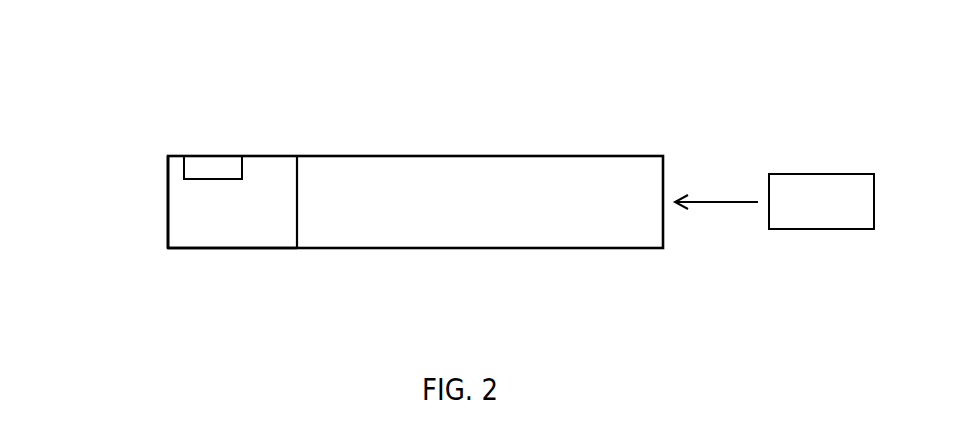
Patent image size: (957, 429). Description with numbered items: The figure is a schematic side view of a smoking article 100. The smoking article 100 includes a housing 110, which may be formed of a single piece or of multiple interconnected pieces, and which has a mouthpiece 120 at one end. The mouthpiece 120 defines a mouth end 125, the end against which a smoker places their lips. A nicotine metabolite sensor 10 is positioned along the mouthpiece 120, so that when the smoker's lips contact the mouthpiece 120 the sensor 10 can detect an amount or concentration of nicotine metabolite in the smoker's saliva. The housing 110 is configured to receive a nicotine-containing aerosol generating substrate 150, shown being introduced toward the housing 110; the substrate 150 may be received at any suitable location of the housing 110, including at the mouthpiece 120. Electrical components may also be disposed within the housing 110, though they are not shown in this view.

The smoking article 100 is at (182, 98).
The nicotine metabolite sensor 10 is at (212, 169).
The housing 110 is at (387, 155).
The mouthpiece 120 is at (230, 248).
The mouth end 125 is at (167, 210).
The nicotine-containing aerosol generating substrate 150 is at (841, 215).